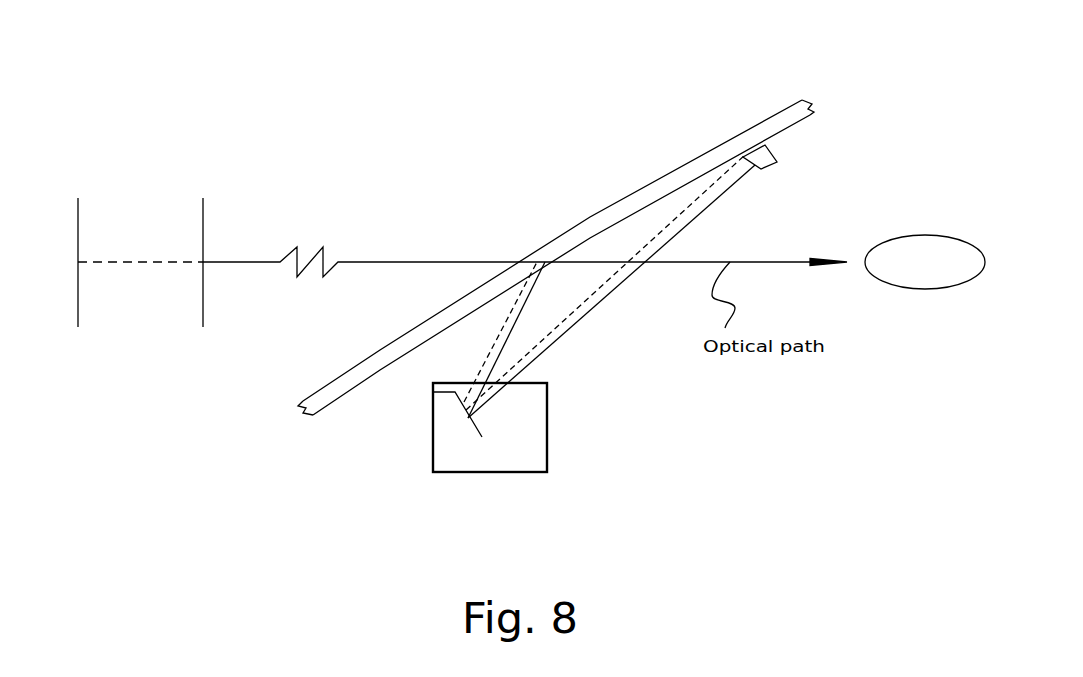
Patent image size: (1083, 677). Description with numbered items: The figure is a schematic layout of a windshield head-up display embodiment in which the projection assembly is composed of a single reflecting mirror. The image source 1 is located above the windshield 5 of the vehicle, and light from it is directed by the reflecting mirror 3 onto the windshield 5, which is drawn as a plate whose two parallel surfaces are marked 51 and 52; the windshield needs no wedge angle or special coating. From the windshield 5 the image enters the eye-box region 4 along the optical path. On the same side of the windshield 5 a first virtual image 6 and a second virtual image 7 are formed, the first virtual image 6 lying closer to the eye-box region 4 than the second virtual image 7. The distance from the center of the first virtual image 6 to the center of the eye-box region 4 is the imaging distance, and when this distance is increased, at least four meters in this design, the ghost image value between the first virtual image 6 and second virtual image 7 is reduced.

The image source 1 is at (777, 158).
The reflecting mirror 3 is at (432, 392).
The eye-box region 4 is at (912, 245).
The windshield 5 is at (556, 226).
The first surface of beam splitter 51 is at (528, 262).
The second surface of beam splitter 52 is at (548, 263).
The first virtual image 6 is at (203, 198).
The second virtual image 7 is at (78, 198).